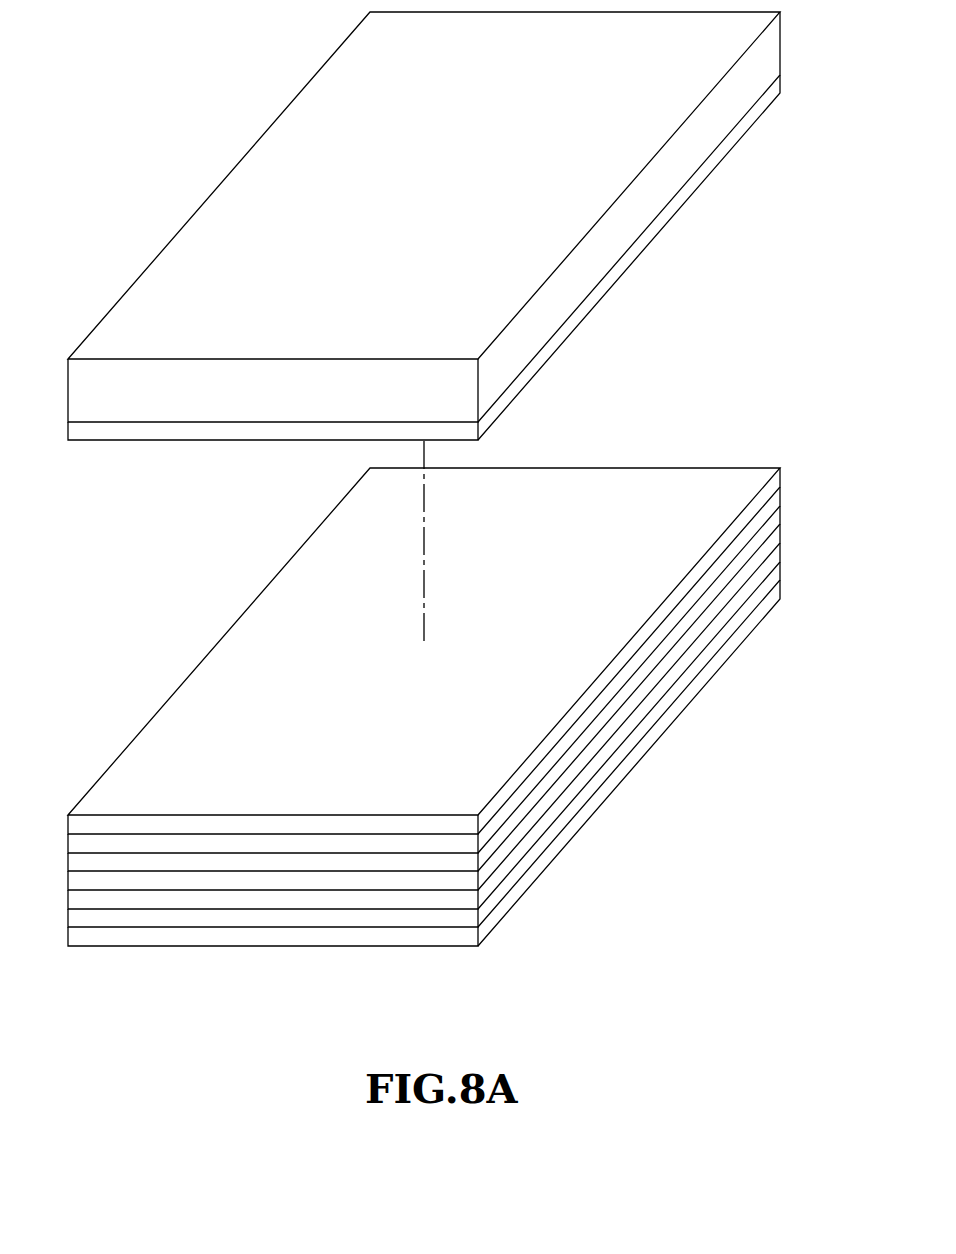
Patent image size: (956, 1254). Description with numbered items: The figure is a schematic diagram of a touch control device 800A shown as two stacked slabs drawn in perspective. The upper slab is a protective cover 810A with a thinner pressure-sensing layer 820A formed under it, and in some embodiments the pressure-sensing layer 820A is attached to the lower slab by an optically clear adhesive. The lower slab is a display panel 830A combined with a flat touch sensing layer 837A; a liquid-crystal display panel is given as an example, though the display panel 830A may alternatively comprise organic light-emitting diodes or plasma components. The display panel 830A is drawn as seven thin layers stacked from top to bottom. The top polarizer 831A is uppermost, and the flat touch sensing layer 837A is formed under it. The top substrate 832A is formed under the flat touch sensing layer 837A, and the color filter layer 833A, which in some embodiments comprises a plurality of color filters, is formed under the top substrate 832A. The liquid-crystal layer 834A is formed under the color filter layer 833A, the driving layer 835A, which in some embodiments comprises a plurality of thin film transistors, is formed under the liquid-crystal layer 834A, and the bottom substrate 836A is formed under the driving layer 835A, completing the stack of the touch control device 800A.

The touch control device 800A is at (430, 496).
The protective cover 810A is at (625, 223).
The pressure-sensing layer 820A is at (610, 290).
The display panel 830A is at (434, 724).
The top polarizer 831A is at (592, 694).
The top substrate 832A is at (568, 767).
The color filter layer 833A is at (533, 832).
The liquid-crystal layer 834A is at (546, 842).
The driving layer 835A is at (527, 875).
The bottom substrate 836A is at (507, 912).
The flat touch sensing layer 837A is at (582, 730).